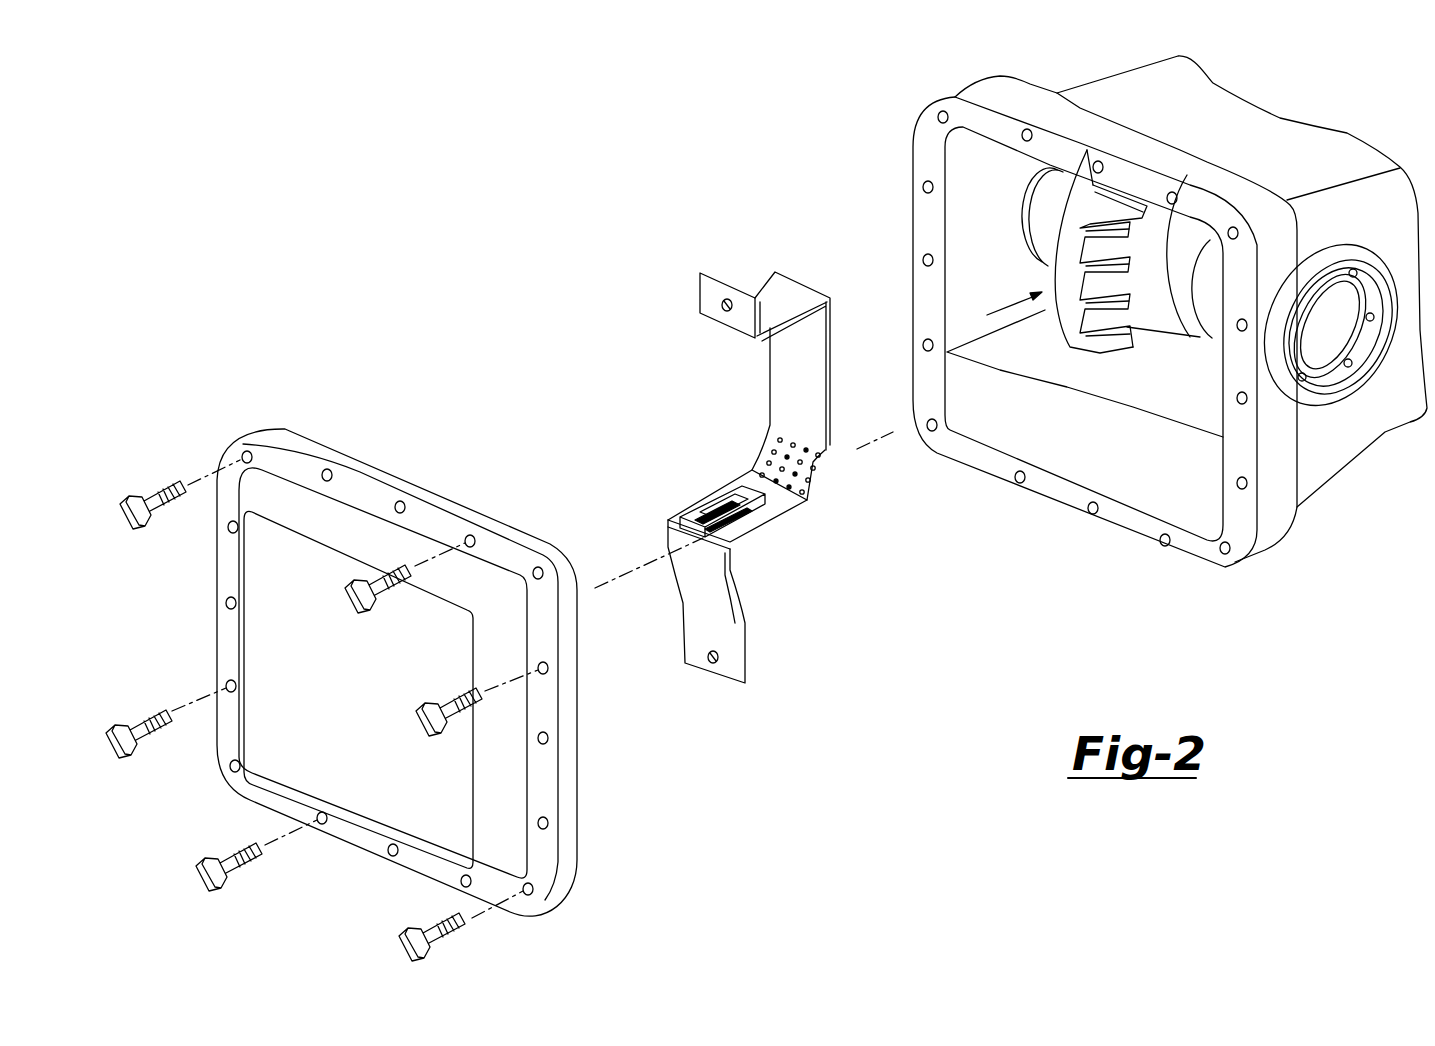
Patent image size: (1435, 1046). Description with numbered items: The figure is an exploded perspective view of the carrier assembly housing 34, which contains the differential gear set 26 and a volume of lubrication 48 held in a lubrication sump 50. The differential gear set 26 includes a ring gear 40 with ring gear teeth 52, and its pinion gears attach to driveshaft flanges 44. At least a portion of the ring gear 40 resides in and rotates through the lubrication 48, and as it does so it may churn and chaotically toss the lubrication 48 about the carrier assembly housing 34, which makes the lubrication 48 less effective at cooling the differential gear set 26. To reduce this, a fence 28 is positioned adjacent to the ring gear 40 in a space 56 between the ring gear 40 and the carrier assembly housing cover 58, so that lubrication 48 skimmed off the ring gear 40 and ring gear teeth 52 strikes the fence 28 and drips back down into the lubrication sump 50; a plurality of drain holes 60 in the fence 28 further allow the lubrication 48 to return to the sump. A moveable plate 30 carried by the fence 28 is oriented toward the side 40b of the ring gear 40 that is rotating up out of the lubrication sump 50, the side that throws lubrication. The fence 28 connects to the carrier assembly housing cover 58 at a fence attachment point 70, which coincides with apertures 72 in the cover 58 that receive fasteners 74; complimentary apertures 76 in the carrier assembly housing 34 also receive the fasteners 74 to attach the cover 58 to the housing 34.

The differential gear set 26 is at (999, 312).
The fence 28 is at (785, 379).
The moveable plate 30 is at (707, 507).
The carrier assembly housing 34 is at (1312, 140).
The ring gear 40 is at (1100, 219).
The side of the ring gear 40b is at (1058, 272).
The driveshaft flanges 44 is at (1040, 213).
The lubrication 48 is at (1068, 436).
The lubrication sump 50 is at (1173, 500).
The ring gear teeth 52 is at (1145, 225).
The space 56 is at (1165, 253).
The carrier assembly housing cover 58 is at (374, 707).
The drain holes 60 is at (793, 451).
The fence attachment point 70 is at (403, 500).
The apertures 72 is at (245, 452).
The fasteners 74 is at (171, 504).
The complimentary apertures 76 is at (940, 113).